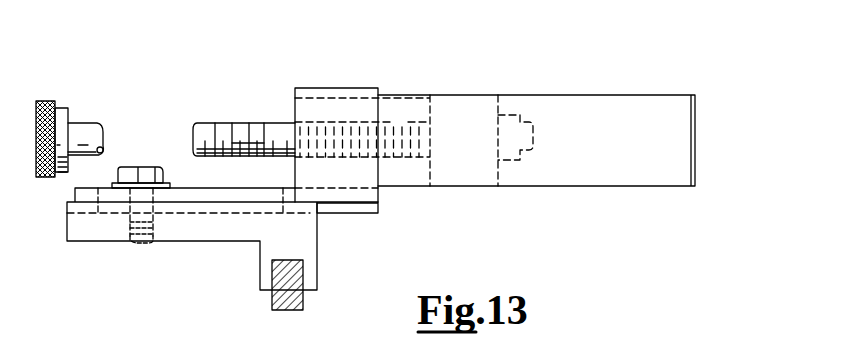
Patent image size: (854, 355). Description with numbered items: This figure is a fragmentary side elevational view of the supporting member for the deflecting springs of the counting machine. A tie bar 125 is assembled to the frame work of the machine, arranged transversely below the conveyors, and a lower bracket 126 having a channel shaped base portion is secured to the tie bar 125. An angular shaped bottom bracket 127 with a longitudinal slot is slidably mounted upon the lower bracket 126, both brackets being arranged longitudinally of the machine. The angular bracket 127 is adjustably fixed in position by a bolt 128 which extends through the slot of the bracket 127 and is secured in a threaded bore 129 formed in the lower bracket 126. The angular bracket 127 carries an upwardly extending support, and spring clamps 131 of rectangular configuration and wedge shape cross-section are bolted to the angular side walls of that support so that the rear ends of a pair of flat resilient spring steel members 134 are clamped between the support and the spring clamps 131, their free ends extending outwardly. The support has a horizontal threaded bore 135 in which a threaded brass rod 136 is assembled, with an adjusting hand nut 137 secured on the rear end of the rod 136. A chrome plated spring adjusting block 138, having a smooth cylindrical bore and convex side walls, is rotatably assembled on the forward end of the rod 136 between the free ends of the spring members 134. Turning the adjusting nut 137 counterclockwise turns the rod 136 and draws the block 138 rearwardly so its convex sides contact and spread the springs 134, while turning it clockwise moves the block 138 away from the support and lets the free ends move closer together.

The tie bar 125 is at (305, 308).
The lower bracket 126 is at (102, 232).
The angular shaped bottom bracket 127 is at (73, 192).
The bolt 128 is at (137, 167).
The threaded bore 129 is at (143, 243).
The spring clamps 131 is at (348, 86).
The spring members 134 is at (657, 107).
The threaded bore 135 is at (345, 133).
The threaded brass rod 136 is at (257, 130).
The adjusting hand nut 137 is at (45, 101).
The spring adjusting block 138 is at (463, 120).